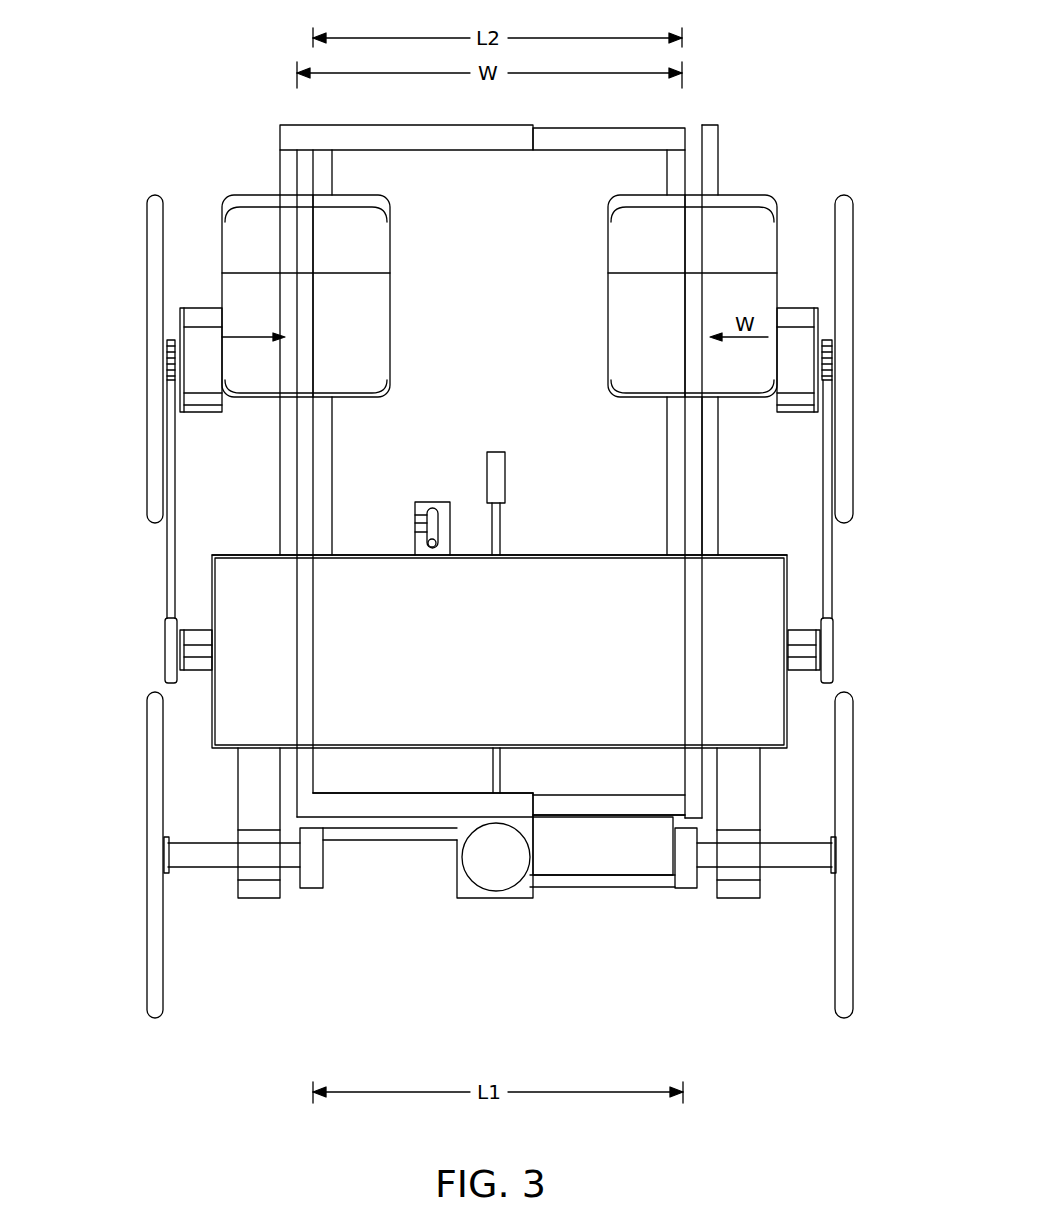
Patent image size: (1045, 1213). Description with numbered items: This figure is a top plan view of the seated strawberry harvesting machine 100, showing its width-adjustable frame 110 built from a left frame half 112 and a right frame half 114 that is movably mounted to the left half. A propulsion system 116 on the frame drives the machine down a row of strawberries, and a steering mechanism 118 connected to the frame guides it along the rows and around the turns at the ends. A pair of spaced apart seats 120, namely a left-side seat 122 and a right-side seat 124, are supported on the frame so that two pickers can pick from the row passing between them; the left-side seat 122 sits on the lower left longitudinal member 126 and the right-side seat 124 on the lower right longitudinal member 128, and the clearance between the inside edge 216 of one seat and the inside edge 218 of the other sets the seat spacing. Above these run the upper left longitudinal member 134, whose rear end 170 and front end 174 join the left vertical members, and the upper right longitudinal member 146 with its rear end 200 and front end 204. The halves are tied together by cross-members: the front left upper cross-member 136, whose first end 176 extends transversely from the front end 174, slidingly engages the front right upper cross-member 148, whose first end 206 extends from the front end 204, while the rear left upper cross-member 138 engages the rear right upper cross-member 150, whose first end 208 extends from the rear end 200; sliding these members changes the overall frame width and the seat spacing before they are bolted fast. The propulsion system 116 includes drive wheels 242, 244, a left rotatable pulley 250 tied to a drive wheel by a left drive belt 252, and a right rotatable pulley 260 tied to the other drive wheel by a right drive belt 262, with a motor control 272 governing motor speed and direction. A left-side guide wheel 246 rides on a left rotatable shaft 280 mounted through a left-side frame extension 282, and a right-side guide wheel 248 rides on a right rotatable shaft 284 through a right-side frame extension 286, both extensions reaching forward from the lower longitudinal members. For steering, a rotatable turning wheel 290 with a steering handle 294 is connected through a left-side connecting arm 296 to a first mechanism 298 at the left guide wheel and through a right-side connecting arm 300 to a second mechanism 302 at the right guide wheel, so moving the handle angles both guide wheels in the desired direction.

The harvesting machine 100 is at (168, 60).
The frame 110 is at (238, 127).
The left frame half 112 is at (872, 545).
The right frame half 114 is at (106, 546).
The propulsion system 116 is at (104, 704).
The steering mechanism 118 is at (458, 996).
The pair of spaced apart seats 120 is at (516, 241).
The left-side seat 122 is at (635, 327).
The right-side seat 124 is at (373, 358).
The lower left longitudinal member 126 is at (710, 178).
The lower right longitudinal member 128 is at (288, 458).
The upper left longitudinal member 134 is at (695, 465).
The front left upper cross-member 136 is at (620, 805).
The rear left upper cross-member 138 is at (590, 135).
The upper right longitudinal member 146 is at (305, 535).
The front right upper cross-member 148 is at (408, 805).
The rear right upper cross-member 150 is at (421, 135).
The rear end of the upper left longitudinal member 170 is at (692, 130).
The front end of the upper left longitudinal member 174 is at (693, 808).
The first end of the front left upper cross-member 176 is at (668, 808).
The rear end of the upper right longitudinal member 200 is at (305, 160).
The front end of the upper right longitudinal member 204 is at (305, 775).
The first end of the front right upper cross-member 206 is at (335, 805).
The first end of the rear right upper cross-member 208 is at (322, 126).
The inside edge of the left-side seat 216 is at (600, 398).
The inside edge of the right-side seat 218 is at (392, 398).
The drive wheel 242 is at (845, 240).
The drive wheel 244 is at (152, 262).
The left-side guide wheel 246 is at (845, 958).
The right-side guide wheel 248 is at (155, 955).
The left rotatable pulley 250 is at (830, 650).
The left drive belt 252 is at (830, 587).
The right rotatable pulley 260 is at (170, 652).
The right drive belt 262 is at (170, 590).
The motor control 272 is at (430, 505).
The left rotatable shaft 280 is at (780, 855).
The left-side frame extension 282 is at (740, 900).
The right rotatable shaft 284 is at (188, 855).
The right-side frame extension 286 is at (260, 895).
The rotatable turning wheel 290 is at (496, 872).
The steering handle 294 is at (497, 485).
The left-side connecting arm 296 is at (556, 880).
The first mechanism 298 is at (687, 878).
The right-side connecting arm 300 is at (432, 835).
The second mechanism 302 is at (313, 878).